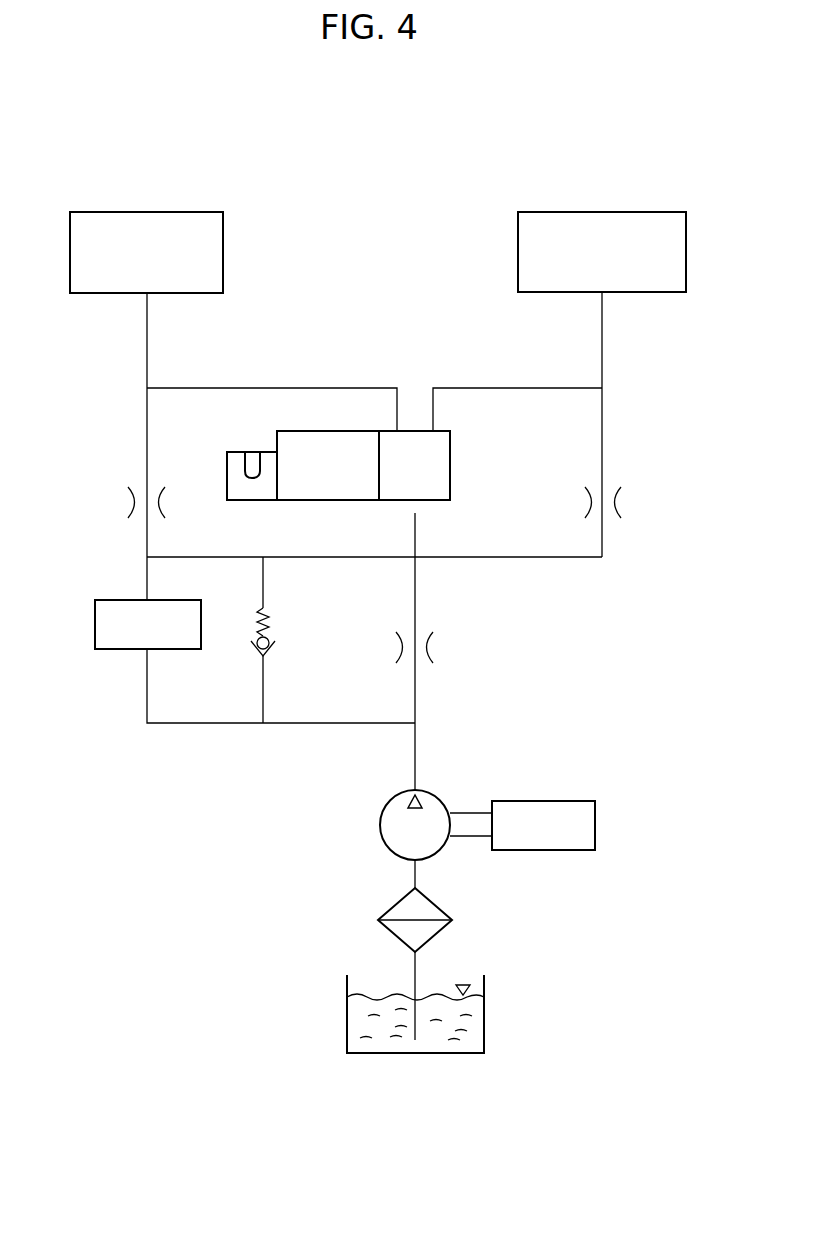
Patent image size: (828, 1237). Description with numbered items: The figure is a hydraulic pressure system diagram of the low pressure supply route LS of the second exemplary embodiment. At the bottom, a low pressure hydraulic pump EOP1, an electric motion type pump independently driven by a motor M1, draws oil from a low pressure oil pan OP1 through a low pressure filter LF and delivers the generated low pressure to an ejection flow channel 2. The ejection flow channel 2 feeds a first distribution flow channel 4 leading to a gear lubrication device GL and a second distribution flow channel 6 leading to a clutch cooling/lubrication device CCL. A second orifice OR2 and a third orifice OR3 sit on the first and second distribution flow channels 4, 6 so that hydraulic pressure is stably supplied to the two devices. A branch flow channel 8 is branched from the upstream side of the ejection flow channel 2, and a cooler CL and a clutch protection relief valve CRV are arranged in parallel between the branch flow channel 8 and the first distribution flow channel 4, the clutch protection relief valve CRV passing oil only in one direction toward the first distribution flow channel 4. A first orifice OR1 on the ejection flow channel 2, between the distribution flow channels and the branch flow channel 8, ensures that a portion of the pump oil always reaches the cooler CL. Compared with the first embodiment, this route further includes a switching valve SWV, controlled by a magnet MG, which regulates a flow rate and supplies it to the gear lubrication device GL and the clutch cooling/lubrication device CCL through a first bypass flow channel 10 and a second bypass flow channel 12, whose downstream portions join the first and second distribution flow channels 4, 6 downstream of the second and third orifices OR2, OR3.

The gear lubrication device GL is at (167, 212).
The clutch cooling/lubrication device CCL is at (632, 212).
The first distribution flow channel 4 is at (147, 417).
The second distribution flow channel 6 is at (602, 408).
The first bypass flow channel 10 is at (222, 388).
The second bypass flow channel 12 is at (538, 388).
The ejection flow channel 2 is at (415, 705).
The branch flow channel 8 is at (208, 723).
The low pressure supply route LS is at (204, 853).
The magnet MG is at (303, 465).
The switching valve SWV is at (450, 454).
The first orifice OR1 is at (446, 620).
The second orifice OR2 is at (118, 476).
The third orifice OR3 is at (632, 475).
The cooler CL is at (95, 618).
The clutch protection relief valve CRV is at (289, 622).
The low pressure hydraulic pump EOP1 is at (382, 846).
The motor M1 is at (522, 825).
The low pressure filter LF is at (437, 905).
The low pressure oil pan OP1 is at (484, 1026).